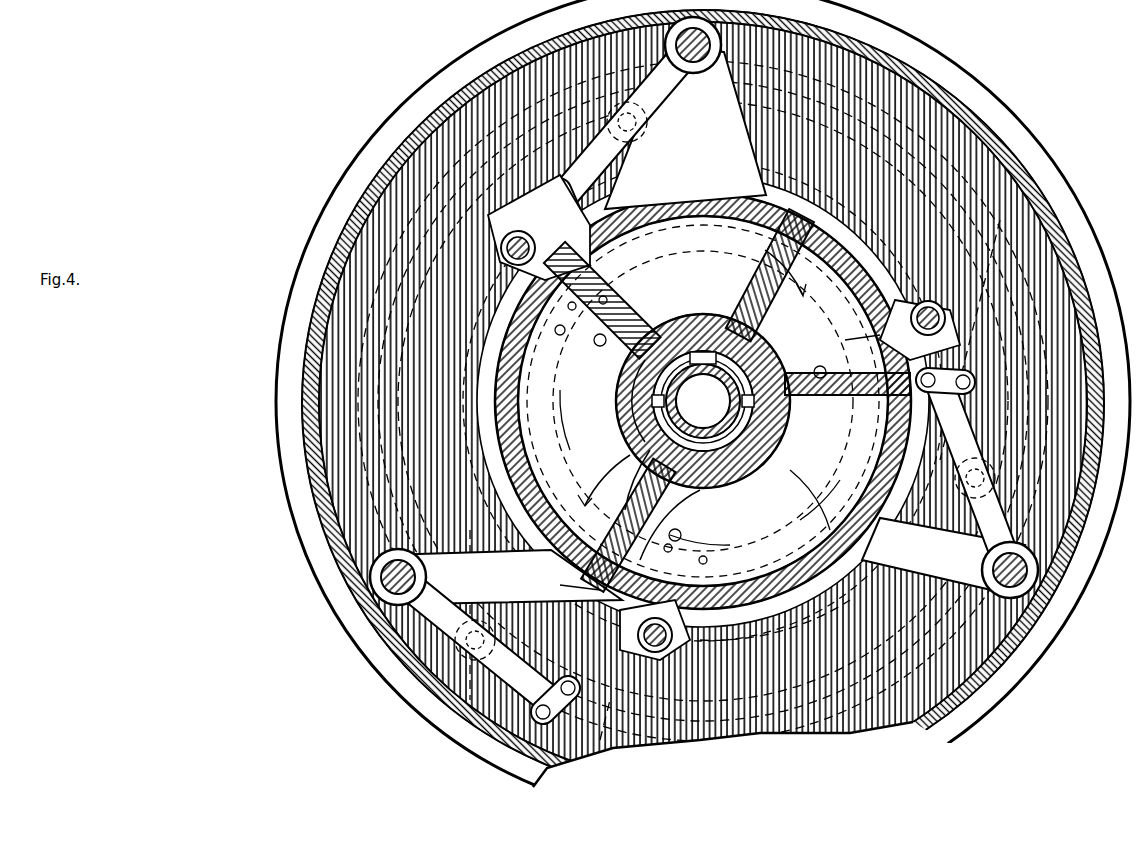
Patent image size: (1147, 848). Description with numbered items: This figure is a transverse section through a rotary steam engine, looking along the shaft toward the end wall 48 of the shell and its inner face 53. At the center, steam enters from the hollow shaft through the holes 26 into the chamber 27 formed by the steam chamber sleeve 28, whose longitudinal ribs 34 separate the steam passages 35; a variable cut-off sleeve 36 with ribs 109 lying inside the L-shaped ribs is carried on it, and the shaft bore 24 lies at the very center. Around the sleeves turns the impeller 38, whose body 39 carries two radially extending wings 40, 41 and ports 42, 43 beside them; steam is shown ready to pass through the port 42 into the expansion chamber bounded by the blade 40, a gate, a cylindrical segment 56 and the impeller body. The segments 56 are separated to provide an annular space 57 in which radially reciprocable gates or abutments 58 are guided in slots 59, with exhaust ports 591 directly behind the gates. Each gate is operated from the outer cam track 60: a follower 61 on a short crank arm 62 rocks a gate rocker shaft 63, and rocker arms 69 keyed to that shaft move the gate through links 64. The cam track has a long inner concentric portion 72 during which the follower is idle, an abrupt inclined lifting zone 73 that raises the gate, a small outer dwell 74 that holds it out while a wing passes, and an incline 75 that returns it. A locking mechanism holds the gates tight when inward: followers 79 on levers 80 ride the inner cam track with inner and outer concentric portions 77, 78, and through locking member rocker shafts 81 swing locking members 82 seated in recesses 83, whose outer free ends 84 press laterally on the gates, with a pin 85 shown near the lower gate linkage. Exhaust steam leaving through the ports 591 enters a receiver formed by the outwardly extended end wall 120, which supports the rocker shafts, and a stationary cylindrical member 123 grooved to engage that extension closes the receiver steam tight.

The shaft 24 is at (703, 401).
The holes 26 is at (745, 412).
The chamber 27 is at (740, 430).
The steam chamber sleeve 28 is at (650, 470).
The longitudinal ribs 34 is at (658, 395).
The steam passages 35 is at (703, 352).
The variable cut-off sleeve 36 is at (650, 392).
The impeller 38 is at (640, 398).
The body of the impeller 39 is at (640, 440).
The wing or blade 40 is at (760, 262).
The wing or blade 41 is at (604, 480).
The port 42 is at (748, 300).
The port 43 is at (642, 525).
The end wall of shell 48 is at (703, 404).
The inner face 53 is at (564, 325).
The cylindrical segments 56 is at (712, 190).
The annular space 57 is at (707, 534).
The gates or abutments 58 is at (754, 433).
The slots 59 is at (709, 437).
The exhaust ports 591 is at (734, 427).
The outer cam track 60 is at (778, 735).
The follower 61 is at (725, 389).
The crank arm 62 is at (721, 374).
The gate rocker shaft 63 is at (372, 585).
The links 64 is at (966, 370).
The rocker arms 69 is at (705, 326).
The concentric portion 72 is at (395, 300).
The inclined lifting zone 73 is at (738, 469).
The outer dwell portion 74 is at (688, 401).
The incline 75 is at (880, 105).
The inner concentric portion 77 is at (703, 401).
The outer concentric portion 78 is at (810, 500).
The followers 79 is at (689, 447).
The levers 80 is at (775, 625).
The locking member rocker shafts 81 is at (500, 215).
The locking members 82 is at (710, 459).
The recesses 83 is at (565, 305).
The outer free ends 84 is at (632, 426).
The pin 85 is at (699, 557).
The ribs 109 is at (785, 294).
The extension 120 is at (703, 404).
The stationary cylindrical member 123 is at (1082, 213).